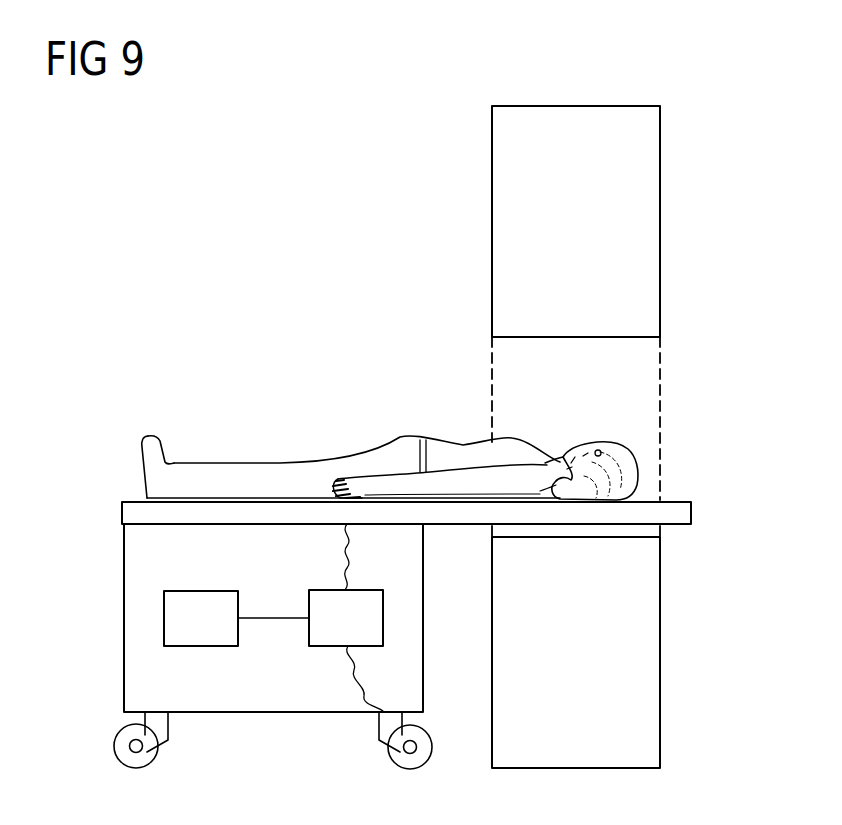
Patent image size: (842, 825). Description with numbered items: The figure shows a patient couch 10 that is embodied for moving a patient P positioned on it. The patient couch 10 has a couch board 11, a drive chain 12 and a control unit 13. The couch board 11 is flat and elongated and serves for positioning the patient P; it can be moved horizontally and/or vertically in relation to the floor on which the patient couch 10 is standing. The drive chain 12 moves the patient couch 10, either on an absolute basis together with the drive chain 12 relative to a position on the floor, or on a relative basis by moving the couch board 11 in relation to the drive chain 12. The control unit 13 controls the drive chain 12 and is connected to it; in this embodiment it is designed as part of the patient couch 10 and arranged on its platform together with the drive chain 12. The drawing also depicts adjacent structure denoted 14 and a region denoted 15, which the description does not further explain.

The patient couch 10 is at (320, 262).
The couch board 11 is at (122, 513).
The drive chain 12 is at (332, 633).
The control unit 13 is at (187, 633).
The magnet unit 14 is at (660, 254).
The imaging region 15 is at (678, 416).
The patient P is at (458, 443).